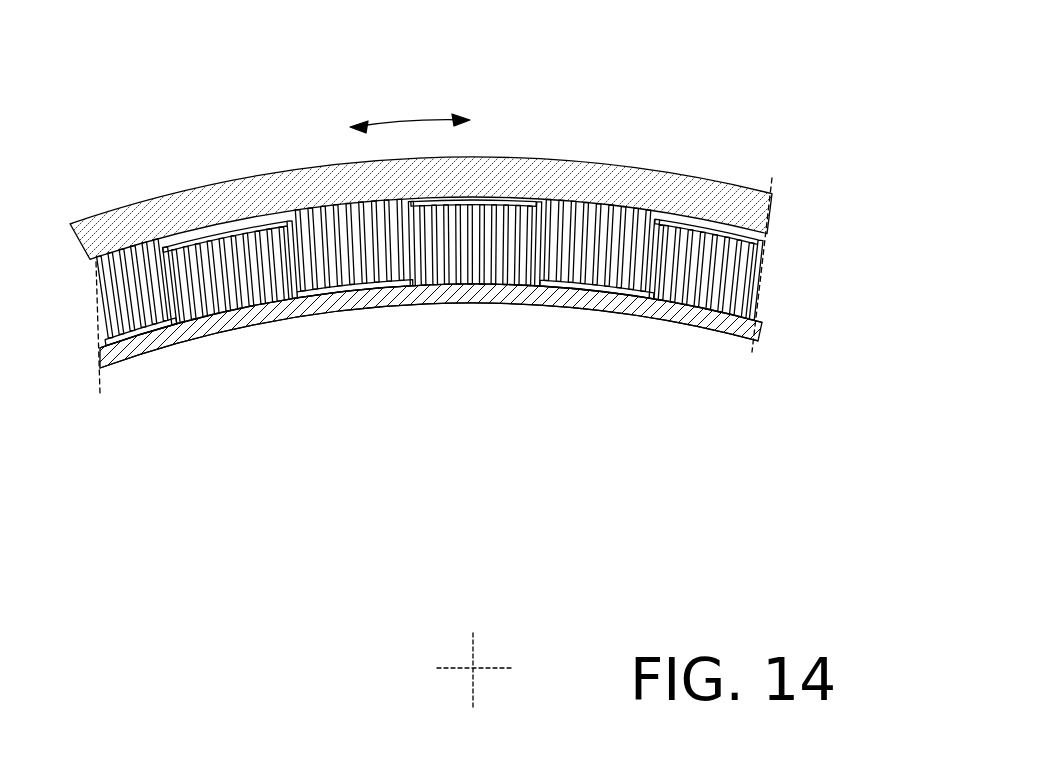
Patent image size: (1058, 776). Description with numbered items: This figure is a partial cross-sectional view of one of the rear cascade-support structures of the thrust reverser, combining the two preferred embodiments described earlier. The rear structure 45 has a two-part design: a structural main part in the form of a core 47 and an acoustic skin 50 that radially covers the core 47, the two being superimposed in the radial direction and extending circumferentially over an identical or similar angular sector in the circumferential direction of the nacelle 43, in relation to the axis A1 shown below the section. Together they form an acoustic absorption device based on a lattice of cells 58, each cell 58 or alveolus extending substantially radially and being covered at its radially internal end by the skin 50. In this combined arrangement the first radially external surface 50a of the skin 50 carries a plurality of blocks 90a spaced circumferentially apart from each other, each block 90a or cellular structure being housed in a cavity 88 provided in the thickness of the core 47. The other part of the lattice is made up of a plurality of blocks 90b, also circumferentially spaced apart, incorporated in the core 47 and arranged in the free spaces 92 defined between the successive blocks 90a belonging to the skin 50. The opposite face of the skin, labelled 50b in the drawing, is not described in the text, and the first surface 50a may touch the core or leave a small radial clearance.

The circumferential direction of the nacelle 43 is at (407, 119).
The rear structure 45 is at (770, 266).
The core 47 is at (634, 190).
The skin 50 is at (688, 332).
The first radially external surface 50a is at (323, 287).
The inner wall second layer 50b is at (625, 320).
The cell 58 is at (97, 296).
The cavity 88 is at (165, 290).
The block 90a is at (246, 296).
The block 90b is at (122, 250).
The free space 92 is at (372, 286).
The axis A1 is at (475, 667).